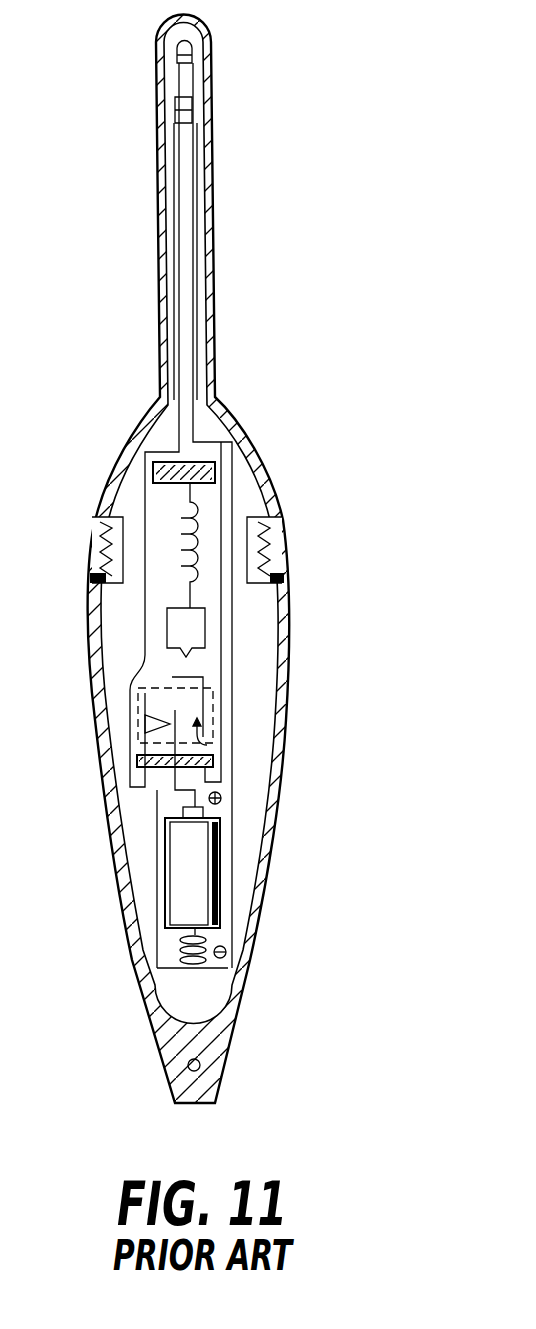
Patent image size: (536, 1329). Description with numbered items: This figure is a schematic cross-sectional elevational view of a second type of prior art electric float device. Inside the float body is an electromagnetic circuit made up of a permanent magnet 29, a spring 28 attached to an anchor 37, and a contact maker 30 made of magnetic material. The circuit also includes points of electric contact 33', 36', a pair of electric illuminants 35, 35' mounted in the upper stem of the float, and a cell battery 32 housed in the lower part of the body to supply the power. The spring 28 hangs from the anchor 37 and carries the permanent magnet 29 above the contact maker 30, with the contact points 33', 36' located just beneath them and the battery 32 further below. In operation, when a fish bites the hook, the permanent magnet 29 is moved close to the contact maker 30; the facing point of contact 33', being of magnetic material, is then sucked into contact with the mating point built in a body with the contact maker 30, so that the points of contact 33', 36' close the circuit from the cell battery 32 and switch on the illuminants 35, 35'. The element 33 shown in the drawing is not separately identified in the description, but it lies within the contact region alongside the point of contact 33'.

The electric illuminant 35 is at (234, 40).
The electric illuminant 35' is at (237, 110).
The anchor 37 is at (215, 473).
The spring 28 is at (190, 512).
The permanent magnet 29 is at (178, 632).
The contact maker 30 is at (192, 672).
The light emitter 33 is at (108, 741).
The point of electric contact 33' is at (274, 728).
The point of electric contact 36' is at (246, 782).
The cell battery 32 is at (178, 878).